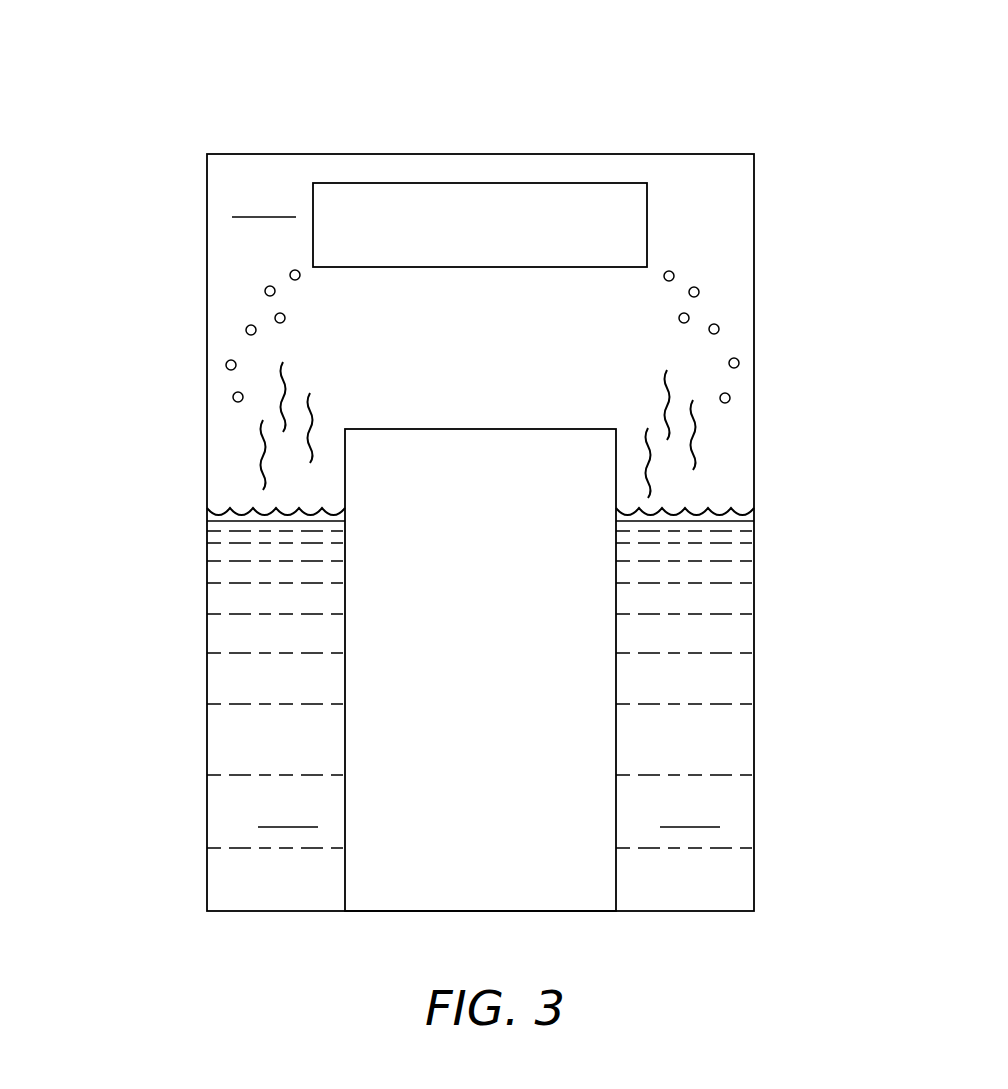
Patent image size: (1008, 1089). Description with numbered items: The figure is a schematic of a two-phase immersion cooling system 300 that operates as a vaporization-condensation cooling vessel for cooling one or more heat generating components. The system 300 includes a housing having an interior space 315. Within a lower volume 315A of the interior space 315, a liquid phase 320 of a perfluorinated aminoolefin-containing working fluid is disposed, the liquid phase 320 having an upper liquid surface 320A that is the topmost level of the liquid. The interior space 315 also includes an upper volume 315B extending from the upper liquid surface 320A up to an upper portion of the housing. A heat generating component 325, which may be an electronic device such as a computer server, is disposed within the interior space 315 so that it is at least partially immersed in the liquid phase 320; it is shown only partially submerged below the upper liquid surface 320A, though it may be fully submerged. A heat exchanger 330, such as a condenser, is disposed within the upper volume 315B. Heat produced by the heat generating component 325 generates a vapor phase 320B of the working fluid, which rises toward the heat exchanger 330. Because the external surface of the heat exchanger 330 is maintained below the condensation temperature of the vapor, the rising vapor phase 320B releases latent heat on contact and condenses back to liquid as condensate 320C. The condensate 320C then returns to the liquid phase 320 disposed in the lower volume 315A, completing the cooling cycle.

The two-phase immersion cooling system 300 is at (461, 504).
The interior space 315 is at (207, 285).
The lower volume 315A is at (731, 735).
The upper volume 315B is at (264, 204).
The liquid phase 320 is at (469, 675).
The upper liquid surface 320A is at (210, 512).
The vapor phase 320B is at (697, 455).
The condensate 320C is at (719, 328).
The heat generating component 325 is at (561, 893).
The heat exchanger 330 is at (408, 184).